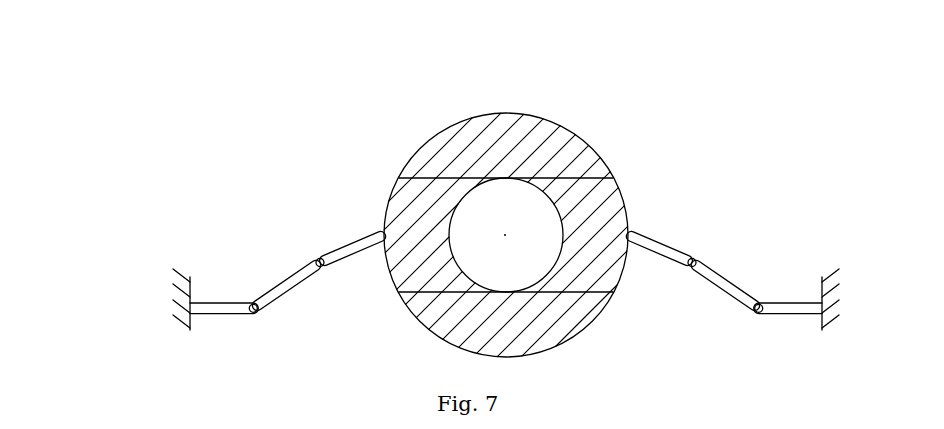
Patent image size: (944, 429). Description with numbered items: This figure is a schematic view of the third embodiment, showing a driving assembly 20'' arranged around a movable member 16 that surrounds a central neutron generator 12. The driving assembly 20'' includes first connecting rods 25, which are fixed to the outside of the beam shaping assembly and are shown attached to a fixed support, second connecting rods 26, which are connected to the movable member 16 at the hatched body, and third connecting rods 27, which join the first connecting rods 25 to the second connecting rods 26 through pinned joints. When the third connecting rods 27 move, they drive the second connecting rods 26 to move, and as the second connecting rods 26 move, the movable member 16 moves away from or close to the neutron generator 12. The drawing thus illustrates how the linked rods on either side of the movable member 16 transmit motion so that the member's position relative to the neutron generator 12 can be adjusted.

The neutron generator 12 is at (492, 232).
The movable member 16 is at (437, 245).
The driving assembly 20'' is at (234, 180).
The first connecting rod 25 is at (218, 305).
The second connecting rod 26 is at (355, 240).
The third connecting rod 27 is at (297, 275).